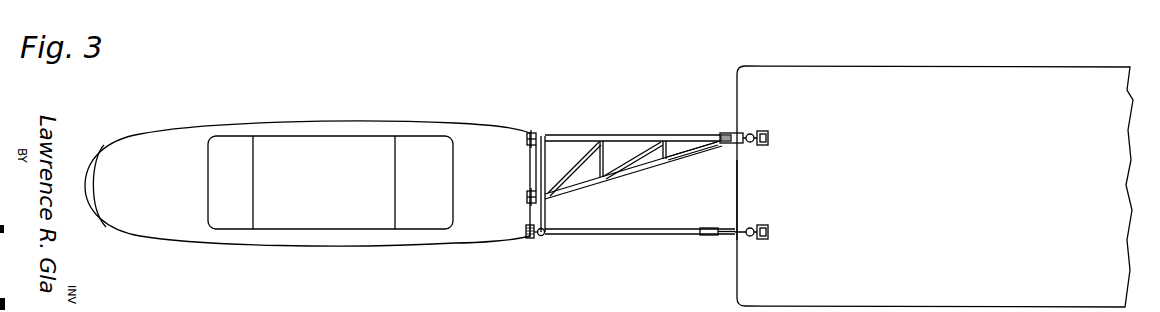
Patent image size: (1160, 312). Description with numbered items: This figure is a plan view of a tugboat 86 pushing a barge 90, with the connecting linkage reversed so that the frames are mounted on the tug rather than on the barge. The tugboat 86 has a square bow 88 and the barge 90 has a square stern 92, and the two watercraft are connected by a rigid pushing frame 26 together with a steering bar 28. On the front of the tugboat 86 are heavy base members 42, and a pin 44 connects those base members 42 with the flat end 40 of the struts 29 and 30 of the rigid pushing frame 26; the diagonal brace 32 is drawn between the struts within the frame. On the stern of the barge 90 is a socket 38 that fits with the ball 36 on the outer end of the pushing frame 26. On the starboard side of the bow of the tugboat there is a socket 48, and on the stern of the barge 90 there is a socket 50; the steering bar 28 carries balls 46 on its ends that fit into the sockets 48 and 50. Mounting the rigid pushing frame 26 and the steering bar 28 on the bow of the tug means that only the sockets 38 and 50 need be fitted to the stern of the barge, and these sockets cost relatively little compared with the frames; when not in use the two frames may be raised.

The tugboat 86 is at (305, 124).
The rigid pushing frame 26 is at (642, 159).
The strut 29 is at (621, 136).
The strut 30 is at (588, 180).
The diagonal brace 32 is at (560, 174).
The square bow 88 is at (548, 214).
The steering bar 28 is at (683, 238).
The flat end 40 is at (526, 141).
The base members 42 is at (530, 131).
The pin 44 is at (528, 190).
The socket 48 is at (528, 240).
The balls 46 is at (543, 236).
The socket 50 is at (769, 228).
The ball 36 is at (750, 133).
The socket 38 is at (768, 133).
The barge 90 is at (975, 66).
The square stern 92 is at (738, 197).